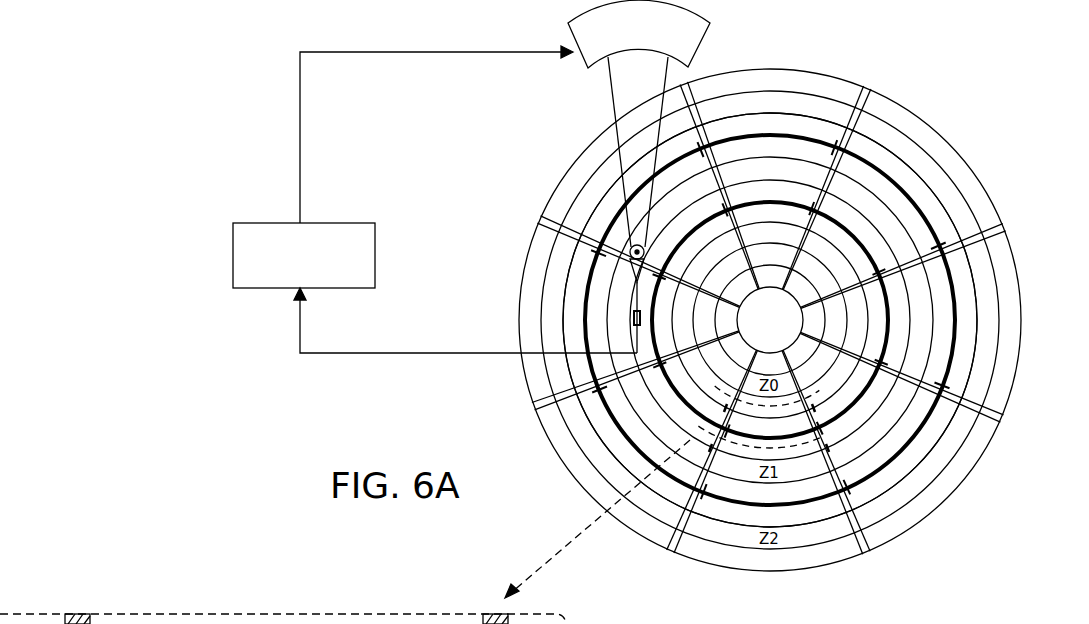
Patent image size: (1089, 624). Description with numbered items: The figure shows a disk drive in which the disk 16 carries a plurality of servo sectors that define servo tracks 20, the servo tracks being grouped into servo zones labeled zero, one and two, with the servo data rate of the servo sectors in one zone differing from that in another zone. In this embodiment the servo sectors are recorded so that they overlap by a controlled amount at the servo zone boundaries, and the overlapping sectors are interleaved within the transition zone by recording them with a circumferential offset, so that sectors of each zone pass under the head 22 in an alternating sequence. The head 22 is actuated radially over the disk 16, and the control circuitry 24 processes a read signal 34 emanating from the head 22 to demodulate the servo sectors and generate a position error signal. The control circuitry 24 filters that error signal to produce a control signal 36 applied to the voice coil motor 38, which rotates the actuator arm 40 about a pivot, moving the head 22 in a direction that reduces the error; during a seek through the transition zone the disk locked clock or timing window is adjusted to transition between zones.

The disk 16 is at (939, 128).
The servo tracks 20 is at (770, 102).
The head 22 is at (632, 318).
The control circuitry 24 is at (343, 222).
The read signal 34 is at (425, 353).
The control signal 36 is at (300, 126).
The voice coil motor 38 is at (588, 66).
The actuator arm 40 is at (615, 114).